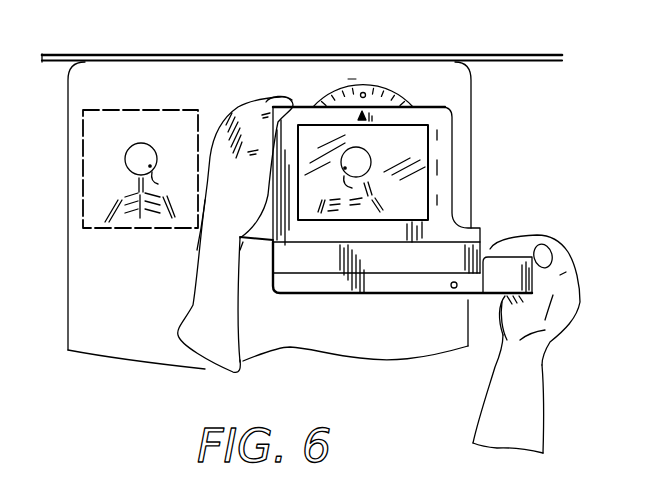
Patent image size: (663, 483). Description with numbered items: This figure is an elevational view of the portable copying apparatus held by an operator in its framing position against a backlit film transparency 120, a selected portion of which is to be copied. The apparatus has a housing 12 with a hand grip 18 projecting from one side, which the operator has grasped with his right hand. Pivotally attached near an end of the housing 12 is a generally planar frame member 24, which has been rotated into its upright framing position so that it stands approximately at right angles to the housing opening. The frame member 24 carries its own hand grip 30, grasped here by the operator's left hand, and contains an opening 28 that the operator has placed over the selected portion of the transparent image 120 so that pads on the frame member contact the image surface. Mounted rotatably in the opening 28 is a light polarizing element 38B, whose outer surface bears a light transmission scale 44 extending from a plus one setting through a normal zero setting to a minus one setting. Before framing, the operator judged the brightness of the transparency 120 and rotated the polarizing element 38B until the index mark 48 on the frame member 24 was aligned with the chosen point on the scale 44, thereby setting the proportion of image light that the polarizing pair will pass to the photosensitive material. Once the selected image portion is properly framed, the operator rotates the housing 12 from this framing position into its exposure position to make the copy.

The housing 12 is at (304, 296).
The hand grip 18 is at (497, 256).
The frame member 24 is at (436, 150).
The opening 28 is at (424, 198).
The hand grip 30 is at (250, 113).
The light polarizing element 38B is at (385, 88).
The light transmission scale 44 is at (352, 70).
The index mark 48 is at (372, 112).
The backlit film transparency 120 is at (140, 78).